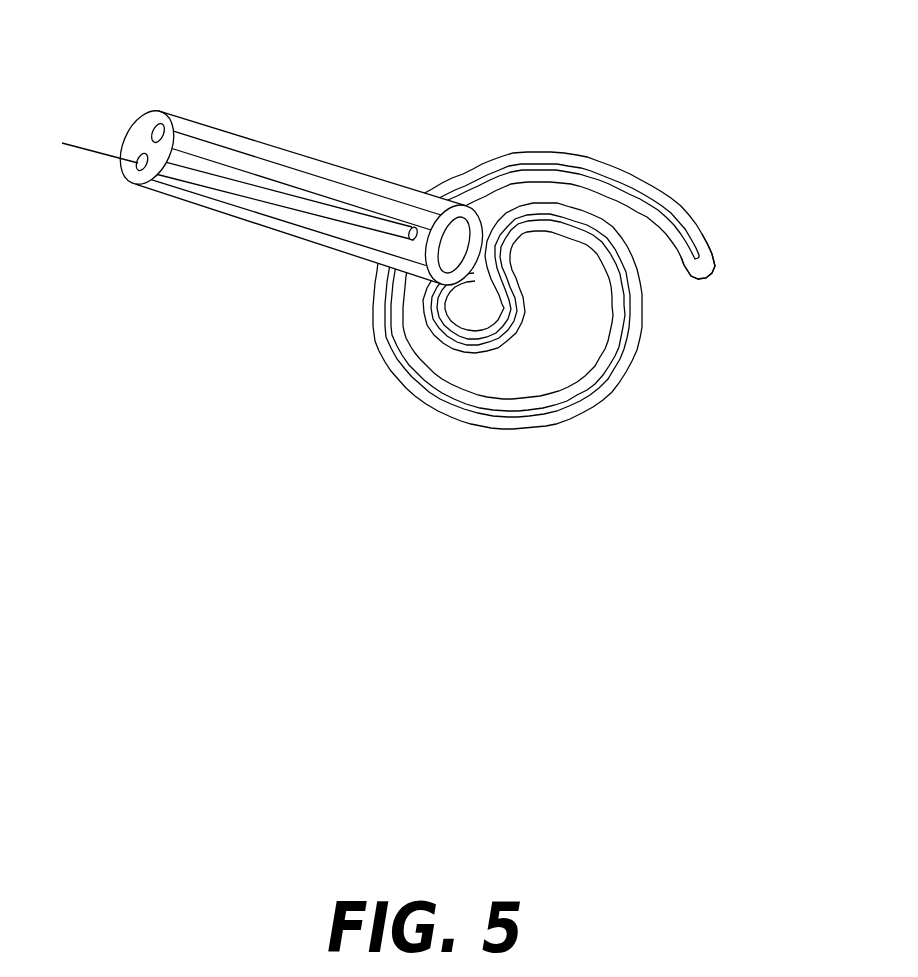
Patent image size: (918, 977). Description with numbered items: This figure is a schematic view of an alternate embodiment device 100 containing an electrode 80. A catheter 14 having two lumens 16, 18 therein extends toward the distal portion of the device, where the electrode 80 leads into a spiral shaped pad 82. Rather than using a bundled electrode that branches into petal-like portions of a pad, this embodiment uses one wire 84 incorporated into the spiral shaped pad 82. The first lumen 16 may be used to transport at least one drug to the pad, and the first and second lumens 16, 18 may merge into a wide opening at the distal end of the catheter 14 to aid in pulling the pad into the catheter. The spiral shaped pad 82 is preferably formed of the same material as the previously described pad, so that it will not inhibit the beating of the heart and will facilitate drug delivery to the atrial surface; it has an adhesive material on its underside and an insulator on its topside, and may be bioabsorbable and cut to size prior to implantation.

The catheter 14 is at (277, 156).
The first lumen 16 is at (141, 158).
The second lumen 18 is at (160, 125).
The electrode 80 is at (333, 222).
The spiral shaped pad 82 is at (708, 269).
The wire 84 is at (618, 358).
The alternate embodiment device 100 is at (608, 116).